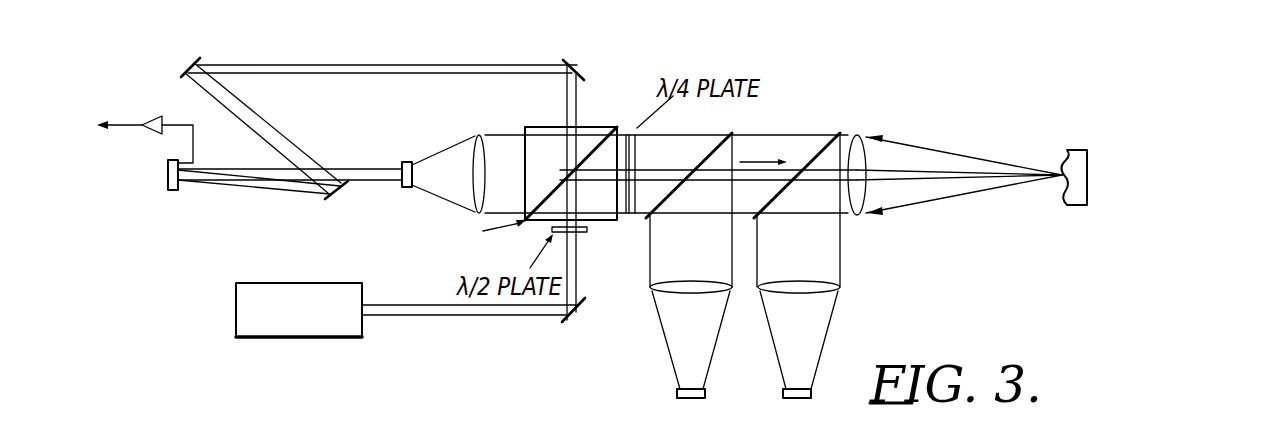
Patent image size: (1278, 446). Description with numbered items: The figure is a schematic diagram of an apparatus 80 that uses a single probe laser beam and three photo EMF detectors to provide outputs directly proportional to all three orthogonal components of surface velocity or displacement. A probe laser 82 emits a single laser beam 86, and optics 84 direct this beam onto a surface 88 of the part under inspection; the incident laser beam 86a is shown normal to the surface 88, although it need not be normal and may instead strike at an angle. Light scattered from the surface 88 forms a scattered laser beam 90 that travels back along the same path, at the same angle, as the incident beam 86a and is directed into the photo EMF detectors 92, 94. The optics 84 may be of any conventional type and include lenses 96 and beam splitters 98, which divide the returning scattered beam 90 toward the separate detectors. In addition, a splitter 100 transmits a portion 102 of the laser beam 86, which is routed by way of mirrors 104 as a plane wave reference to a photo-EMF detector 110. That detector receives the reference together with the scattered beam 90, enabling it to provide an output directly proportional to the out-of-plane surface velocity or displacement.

The apparatus 80 is at (790, 102).
The probe laser 82 is at (240, 320).
The optics 84 is at (605, 326).
The laser beam 86 is at (432, 316).
The incident laser beam 86a is at (954, 172).
The surface 88 is at (1062, 203).
The scattered laser beam 90 is at (364, 168).
The photo EMF detector 92 is at (692, 398).
The photo EMF detector 94 is at (798, 398).
The lenses 96 is at (681, 282).
The beam splitters 98 is at (706, 152).
The splitter 100 is at (553, 192).
The portion of the laser beam 102 is at (577, 110).
The mirrors 104 is at (184, 65).
The photo-EMF detector 110 is at (168, 166).